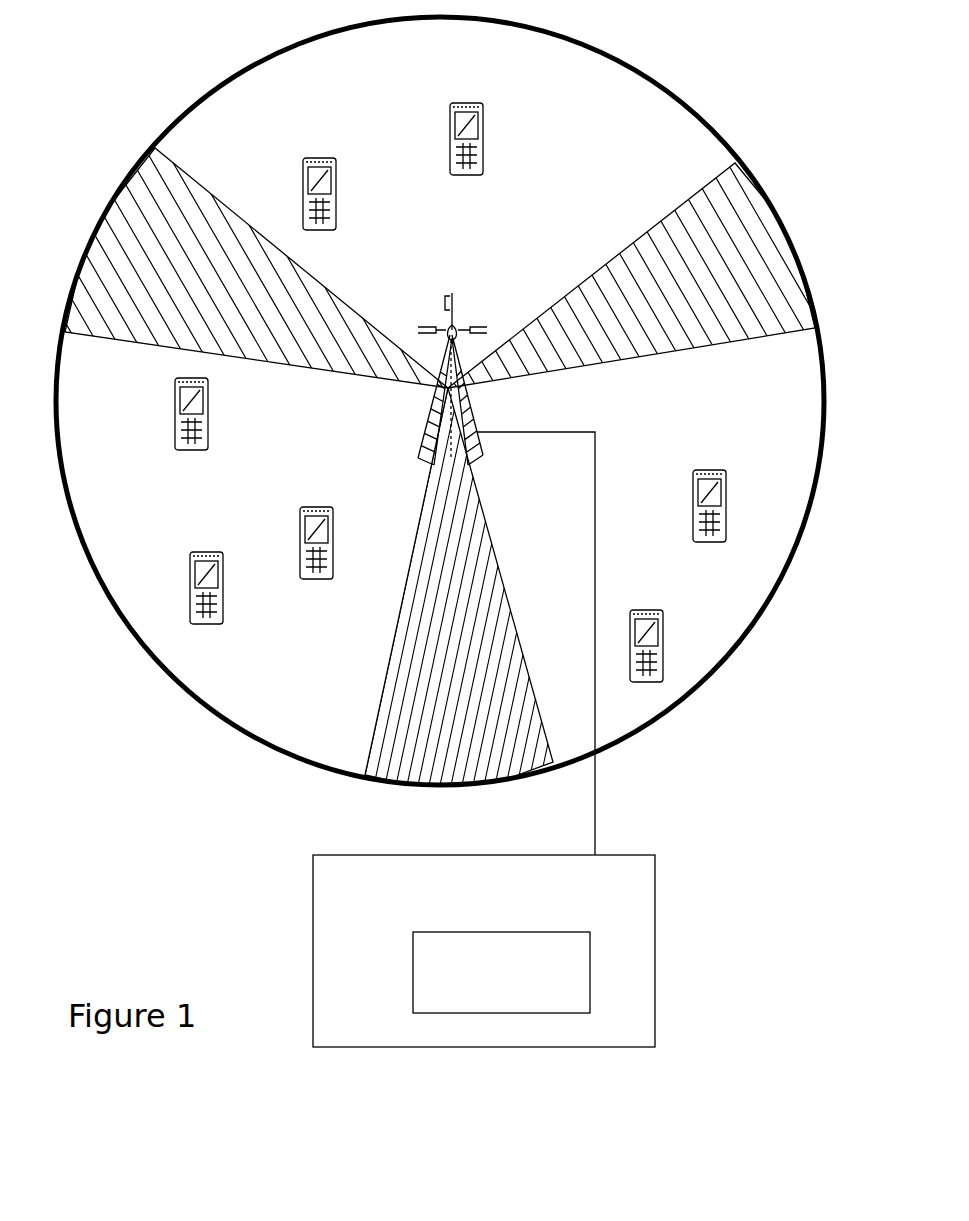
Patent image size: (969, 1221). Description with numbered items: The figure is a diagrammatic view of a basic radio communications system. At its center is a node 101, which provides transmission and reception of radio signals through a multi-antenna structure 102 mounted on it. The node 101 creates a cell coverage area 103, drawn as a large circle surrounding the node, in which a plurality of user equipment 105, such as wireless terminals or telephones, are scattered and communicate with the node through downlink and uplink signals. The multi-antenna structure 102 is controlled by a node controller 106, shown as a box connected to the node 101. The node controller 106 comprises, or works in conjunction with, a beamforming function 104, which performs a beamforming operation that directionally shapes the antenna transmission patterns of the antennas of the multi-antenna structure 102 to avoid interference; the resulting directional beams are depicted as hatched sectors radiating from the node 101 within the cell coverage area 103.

The node 101 is at (472, 408).
The multi-antenna structure 102 is at (458, 294).
The cell coverage area 103 is at (625, 60).
The beamforming function 104 is at (773, 255).
The user equipment 105 is at (483, 130).
The node controller 106 is at (655, 975).